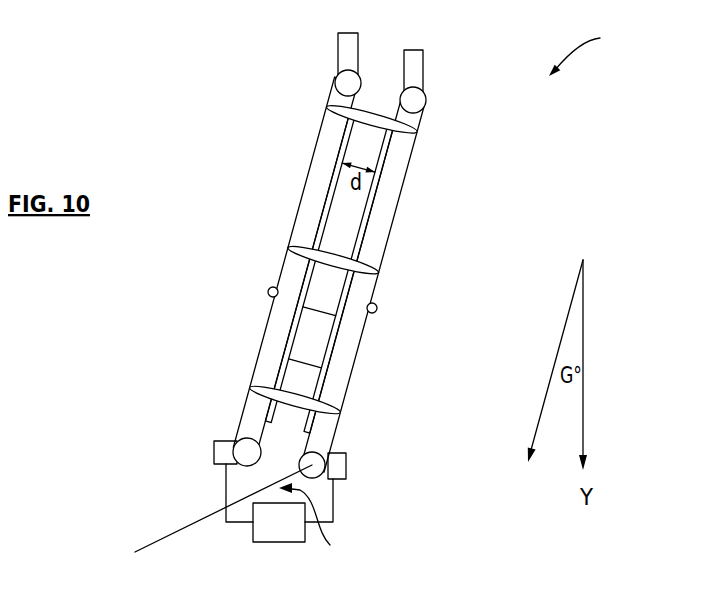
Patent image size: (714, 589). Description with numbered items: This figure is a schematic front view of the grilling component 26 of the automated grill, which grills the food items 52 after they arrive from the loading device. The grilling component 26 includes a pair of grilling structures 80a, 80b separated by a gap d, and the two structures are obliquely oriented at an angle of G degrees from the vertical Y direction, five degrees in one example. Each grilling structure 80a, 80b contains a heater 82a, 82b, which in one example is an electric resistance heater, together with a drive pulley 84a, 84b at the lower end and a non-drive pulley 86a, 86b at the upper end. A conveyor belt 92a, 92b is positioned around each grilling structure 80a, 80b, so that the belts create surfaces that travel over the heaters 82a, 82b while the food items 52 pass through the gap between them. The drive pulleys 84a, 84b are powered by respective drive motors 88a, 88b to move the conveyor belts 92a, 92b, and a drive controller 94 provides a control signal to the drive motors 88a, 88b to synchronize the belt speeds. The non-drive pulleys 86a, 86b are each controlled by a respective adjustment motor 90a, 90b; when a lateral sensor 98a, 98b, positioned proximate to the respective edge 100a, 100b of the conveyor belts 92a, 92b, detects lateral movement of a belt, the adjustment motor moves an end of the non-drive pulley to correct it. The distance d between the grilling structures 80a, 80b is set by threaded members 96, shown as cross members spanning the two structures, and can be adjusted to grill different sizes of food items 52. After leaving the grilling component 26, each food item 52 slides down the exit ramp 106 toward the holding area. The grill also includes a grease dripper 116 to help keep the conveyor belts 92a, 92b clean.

The grilling component 26 is at (589, 51).
The food items 52 is at (357, 347).
The first grilling structure 80a is at (305, 213).
The second grilling structure 80b is at (376, 248).
The first heater 82a is at (300, 280).
The second heater 82b is at (347, 320).
The first drive pulley 84a is at (240, 450).
The second drive pulley 84b is at (320, 460).
The first non-drive pulley 86a is at (350, 82).
The second non-drive pulley 86b is at (413, 100).
The first drive motor 88a is at (214, 452).
The second drive motor 88b is at (340, 470).
The first adjustment motor 90a is at (347, 45).
The second adjustment motor 90b is at (420, 58).
The first conveyor belt 92a is at (320, 136).
The second conveyor belt 92b is at (413, 153).
The drive controller 94 is at (279, 503).
The threaded members 96 is at (327, 112).
The first lateral sensor 98a is at (268, 290).
The second lateral sensor 98b is at (377, 306).
The first conveyor belt edge 100a is at (265, 322).
The second conveyor belt edge 100b is at (317, 350).
The exit ramp 106 is at (157, 538).
The grease dripper 116 is at (325, 520).